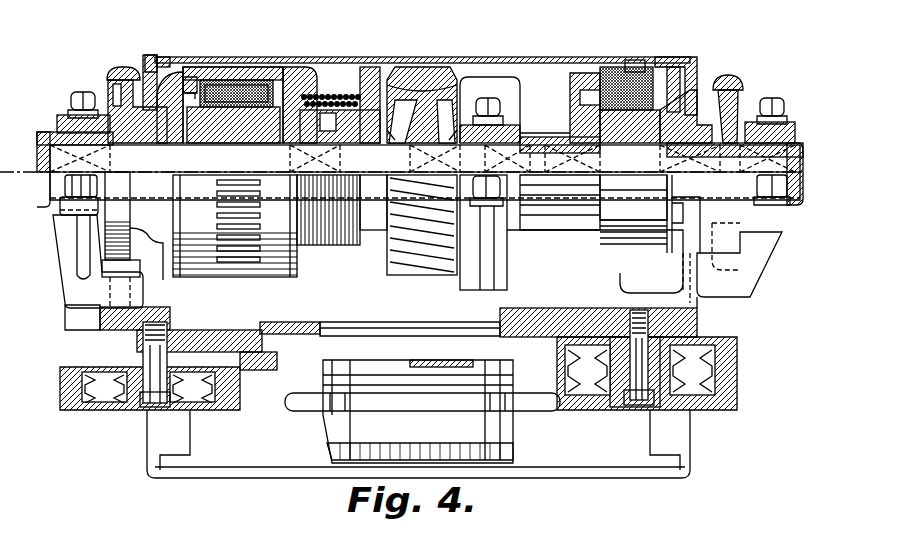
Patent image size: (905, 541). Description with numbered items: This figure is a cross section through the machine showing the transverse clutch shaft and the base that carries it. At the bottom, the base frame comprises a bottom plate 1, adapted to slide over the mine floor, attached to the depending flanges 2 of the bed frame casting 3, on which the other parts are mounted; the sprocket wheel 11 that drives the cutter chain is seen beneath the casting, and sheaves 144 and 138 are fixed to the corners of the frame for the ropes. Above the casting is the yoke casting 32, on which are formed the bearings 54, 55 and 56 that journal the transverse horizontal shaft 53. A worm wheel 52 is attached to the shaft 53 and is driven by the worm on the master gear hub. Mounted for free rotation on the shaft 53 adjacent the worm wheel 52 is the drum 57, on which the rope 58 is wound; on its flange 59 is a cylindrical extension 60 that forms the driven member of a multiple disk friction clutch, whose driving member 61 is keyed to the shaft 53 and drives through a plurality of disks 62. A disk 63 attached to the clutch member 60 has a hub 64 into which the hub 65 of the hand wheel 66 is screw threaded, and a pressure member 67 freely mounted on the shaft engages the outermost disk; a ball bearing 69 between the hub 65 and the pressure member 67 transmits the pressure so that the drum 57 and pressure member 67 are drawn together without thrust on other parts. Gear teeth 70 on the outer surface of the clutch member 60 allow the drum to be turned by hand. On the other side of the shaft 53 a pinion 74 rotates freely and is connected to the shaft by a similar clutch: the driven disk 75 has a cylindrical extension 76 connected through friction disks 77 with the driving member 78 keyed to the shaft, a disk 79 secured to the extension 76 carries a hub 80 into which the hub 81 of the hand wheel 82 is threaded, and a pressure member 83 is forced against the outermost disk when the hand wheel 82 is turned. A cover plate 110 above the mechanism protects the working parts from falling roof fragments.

The bottom plate 1 is at (190, 477).
The depending flanges 2 is at (158, 432).
The bed frame casting 3 is at (270, 352).
The sprocket wheel 11 is at (300, 416).
The yoke casting 32 is at (72, 260).
The worm wheel 52 is at (427, 75).
The transverse horizontal shaft 53 is at (425, 172).
The bearing 54 is at (72, 138).
The bearing 55 is at (519, 128).
The bearing 56 is at (788, 130).
The drum 57 is at (302, 93).
The rope 58 is at (338, 98).
The flange 59 is at (290, 78).
The cylindrical extension 60 is at (212, 75).
The driving member 61 is at (256, 78).
The disks 62 is at (233, 82).
The disk 63 is at (173, 112).
The hub 64 is at (150, 117).
The hub 65 is at (140, 115).
The hand wheel 66 is at (107, 74).
The pressure member 67 is at (191, 78).
The ball bearing 69 is at (160, 80).
The gear teeth 70 is at (245, 277).
The pinion 74 is at (560, 135).
The disk 75 is at (582, 78).
The cylindrical extension 76 is at (633, 80).
The friction disks 77 is at (606, 85).
The driving member 78 is at (617, 80).
The disk 79 is at (684, 100).
The hub 80 is at (700, 125).
The hub 81 is at (719, 85).
The hand wheel 82 is at (735, 78).
The pressure member 83 is at (675, 75).
The cover plate 110 is at (492, 57).
The sheave 138 is at (715, 363).
The sheave 144 is at (88, 378).